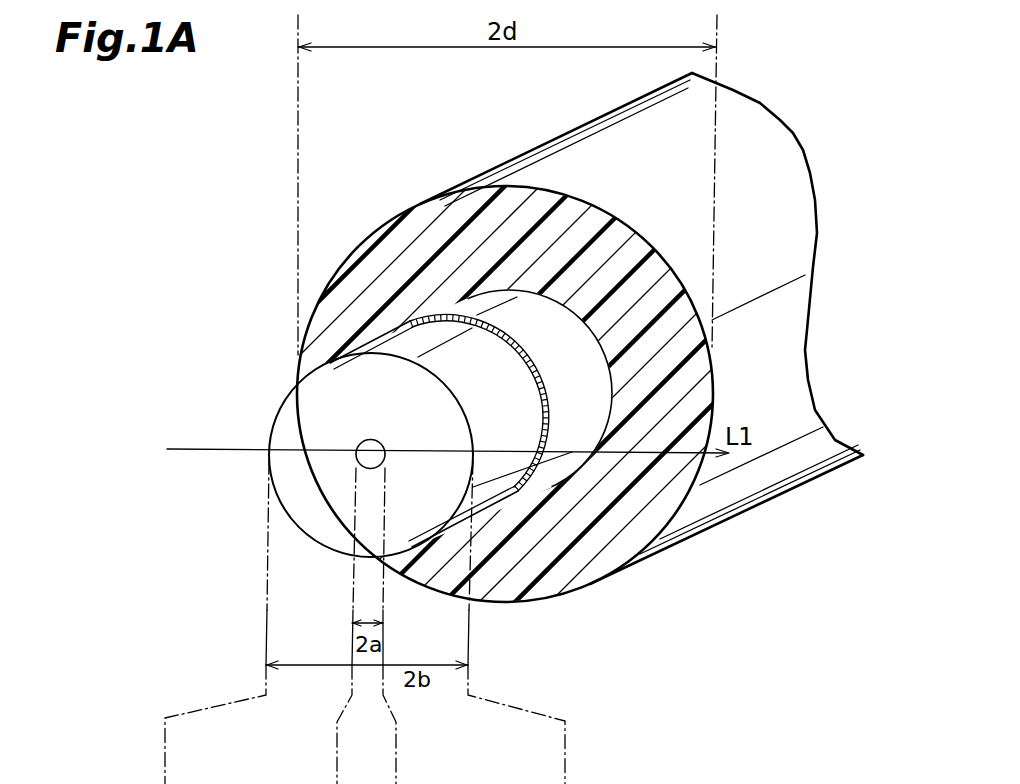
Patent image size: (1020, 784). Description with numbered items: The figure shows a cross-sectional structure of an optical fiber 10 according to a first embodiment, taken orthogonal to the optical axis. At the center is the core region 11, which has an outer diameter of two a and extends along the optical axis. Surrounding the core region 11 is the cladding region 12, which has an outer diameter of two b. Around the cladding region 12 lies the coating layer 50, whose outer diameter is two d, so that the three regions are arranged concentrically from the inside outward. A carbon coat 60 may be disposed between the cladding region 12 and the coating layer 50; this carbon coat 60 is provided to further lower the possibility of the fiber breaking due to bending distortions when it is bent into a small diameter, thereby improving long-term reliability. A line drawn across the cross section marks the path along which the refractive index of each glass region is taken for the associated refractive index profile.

The optical fiber 10 is at (687, 156).
The core region 11 is at (358, 447).
The cladding region 12 is at (302, 410).
The coating layer 50 is at (562, 554).
The carbon coat 60 is at (528, 313).